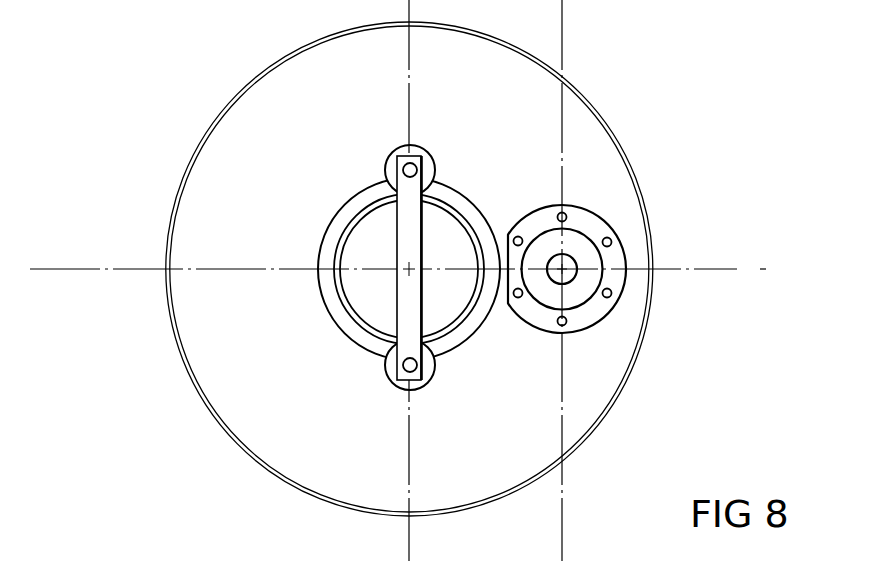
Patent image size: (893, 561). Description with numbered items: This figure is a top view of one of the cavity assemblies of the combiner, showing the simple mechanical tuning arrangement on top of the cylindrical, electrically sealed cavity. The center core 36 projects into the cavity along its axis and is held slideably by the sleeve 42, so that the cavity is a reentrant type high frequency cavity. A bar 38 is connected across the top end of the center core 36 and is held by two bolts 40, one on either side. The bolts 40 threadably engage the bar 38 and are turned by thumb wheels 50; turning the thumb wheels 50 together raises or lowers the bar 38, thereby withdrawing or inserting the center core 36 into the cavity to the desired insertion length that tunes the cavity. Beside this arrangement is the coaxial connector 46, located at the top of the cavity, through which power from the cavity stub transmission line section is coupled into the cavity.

The center core 36 is at (445, 218).
The bar 38 is at (423, 306).
The bolts 40 is at (414, 158).
The sleeve 42 is at (323, 276).
The coaxial connector 46 is at (613, 213).
The thumb wheels 50 is at (436, 372).